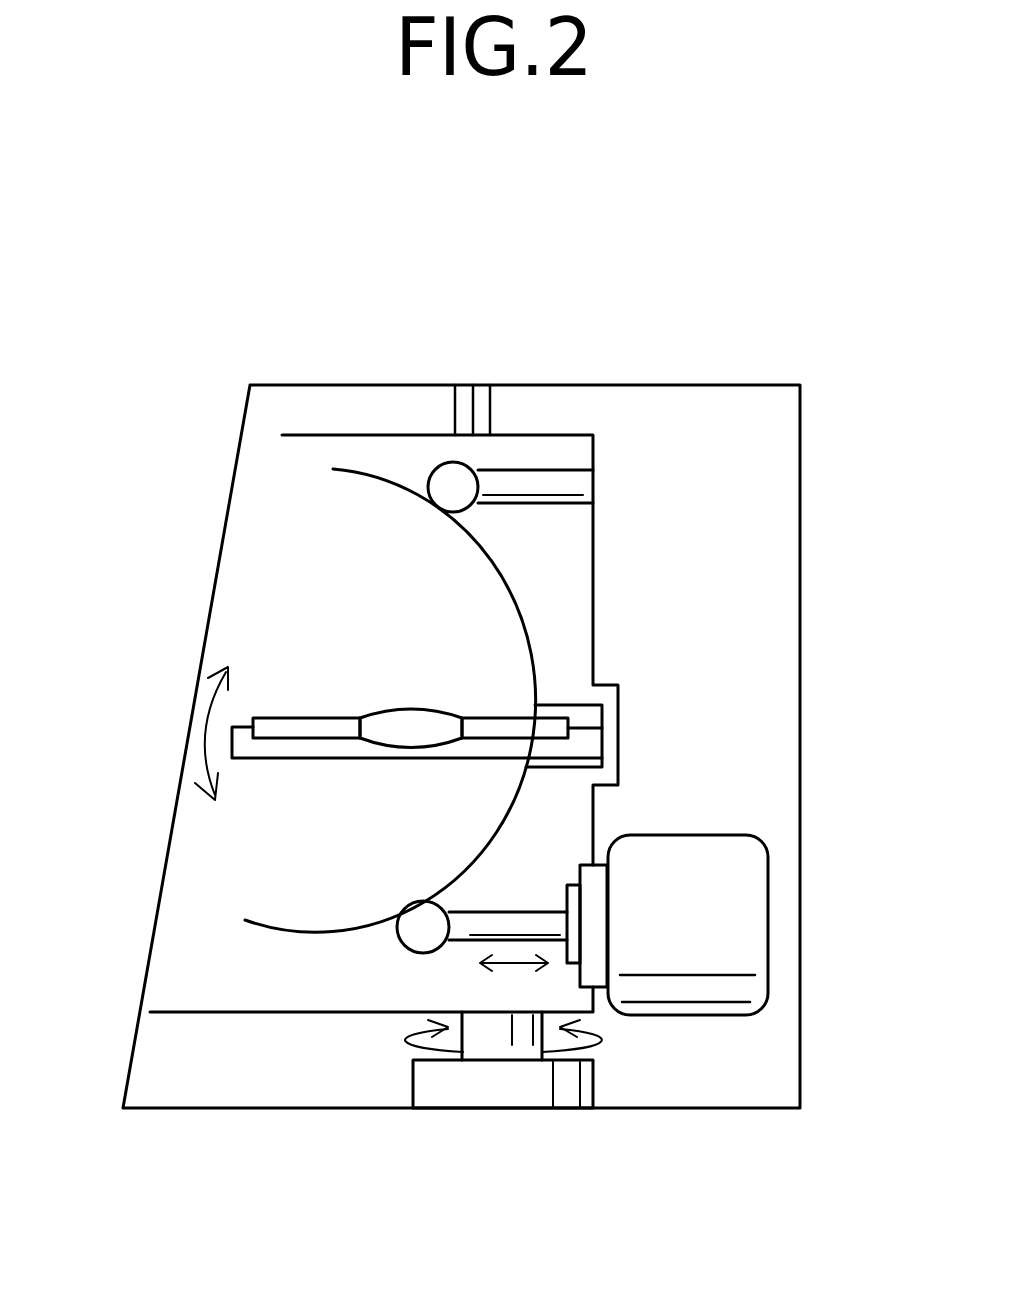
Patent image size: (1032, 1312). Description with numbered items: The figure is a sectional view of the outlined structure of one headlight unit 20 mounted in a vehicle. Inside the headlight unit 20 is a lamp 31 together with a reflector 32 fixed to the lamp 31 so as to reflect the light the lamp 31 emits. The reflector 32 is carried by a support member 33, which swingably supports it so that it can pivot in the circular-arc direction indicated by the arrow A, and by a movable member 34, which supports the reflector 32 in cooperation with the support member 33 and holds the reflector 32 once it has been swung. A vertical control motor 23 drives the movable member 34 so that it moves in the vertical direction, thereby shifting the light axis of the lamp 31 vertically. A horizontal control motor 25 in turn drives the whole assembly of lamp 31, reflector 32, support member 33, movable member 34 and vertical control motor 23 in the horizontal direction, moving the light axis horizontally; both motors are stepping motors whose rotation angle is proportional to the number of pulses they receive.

The headlight unit 20 is at (340, 383).
The vertical control motor 23 is at (742, 879).
The horizontal control motor 25 is at (598, 1083).
The lamp 31 is at (413, 715).
The reflector 32 is at (517, 590).
The support member 33 is at (545, 483).
The movable member 34 is at (468, 928).
The arrow indicating circular-arc swing direction A is at (206, 733).